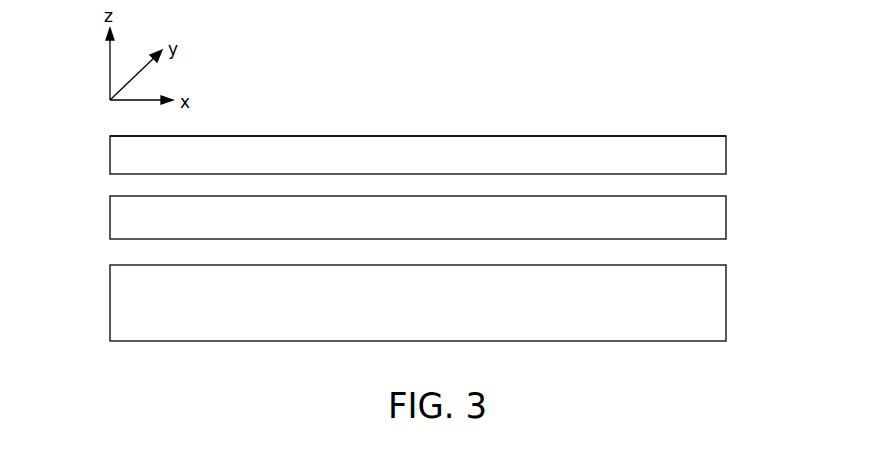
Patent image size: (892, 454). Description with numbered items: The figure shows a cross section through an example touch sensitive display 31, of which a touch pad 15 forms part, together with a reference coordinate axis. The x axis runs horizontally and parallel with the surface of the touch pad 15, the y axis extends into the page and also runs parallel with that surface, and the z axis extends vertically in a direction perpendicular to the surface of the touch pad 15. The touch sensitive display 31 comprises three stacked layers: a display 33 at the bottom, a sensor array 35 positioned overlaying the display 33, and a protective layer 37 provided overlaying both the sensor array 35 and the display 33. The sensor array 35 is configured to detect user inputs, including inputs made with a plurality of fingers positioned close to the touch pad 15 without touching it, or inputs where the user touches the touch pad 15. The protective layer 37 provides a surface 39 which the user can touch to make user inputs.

The touch pad 15 is at (791, 243).
The touch sensitive display 31 is at (92, 348).
The display 33 is at (726, 301).
The sensor array 35 is at (726, 215).
The protective layer 37 is at (726, 153).
The surface 39 is at (676, 136).